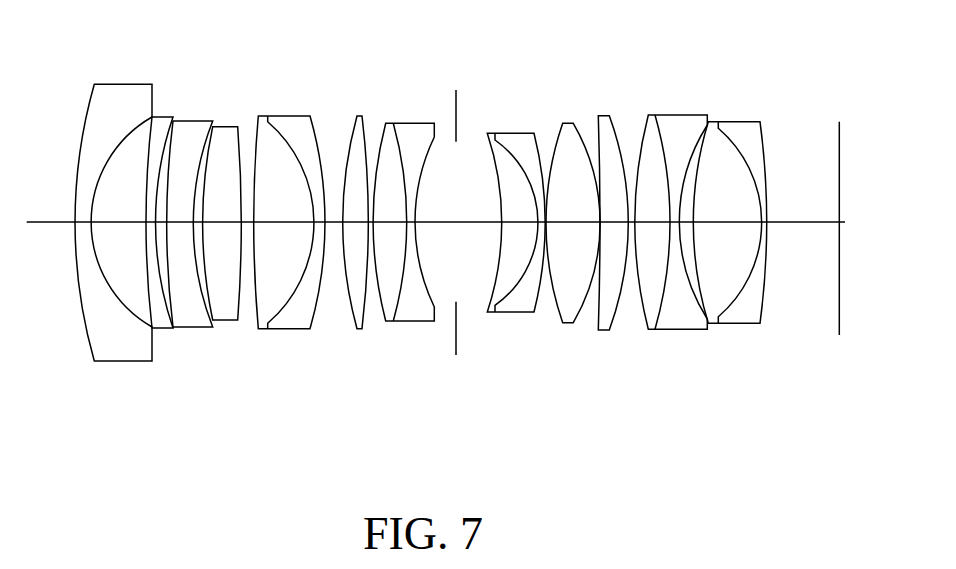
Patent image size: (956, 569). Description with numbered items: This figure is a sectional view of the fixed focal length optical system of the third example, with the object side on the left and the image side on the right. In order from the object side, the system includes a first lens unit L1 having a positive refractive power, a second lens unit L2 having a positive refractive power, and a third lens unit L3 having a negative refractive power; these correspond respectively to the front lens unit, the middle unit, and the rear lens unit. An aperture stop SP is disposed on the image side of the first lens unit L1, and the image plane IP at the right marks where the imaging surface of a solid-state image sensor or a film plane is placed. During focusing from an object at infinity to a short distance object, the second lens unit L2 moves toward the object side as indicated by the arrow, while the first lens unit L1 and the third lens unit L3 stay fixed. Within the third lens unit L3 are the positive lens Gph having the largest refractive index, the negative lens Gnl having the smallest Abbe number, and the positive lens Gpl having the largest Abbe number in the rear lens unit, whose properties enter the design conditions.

The first lens unit L1 is at (462, 367).
The second lens unit L2 is at (627, 367).
The third lens unit L3 is at (690, 243).
The aperture stop SP is at (453, 107).
The image plane IP is at (838, 122).
The positive lens Gph is at (653, 140).
The negative lens Gnl is at (680, 131).
The positive lens Gpl is at (717, 149).